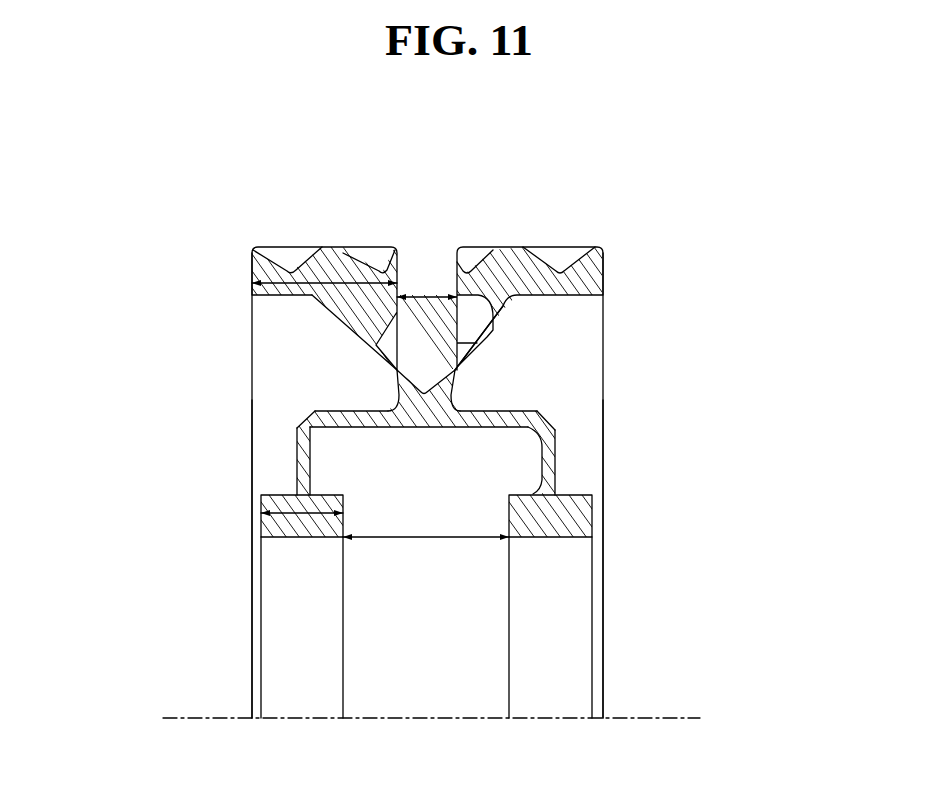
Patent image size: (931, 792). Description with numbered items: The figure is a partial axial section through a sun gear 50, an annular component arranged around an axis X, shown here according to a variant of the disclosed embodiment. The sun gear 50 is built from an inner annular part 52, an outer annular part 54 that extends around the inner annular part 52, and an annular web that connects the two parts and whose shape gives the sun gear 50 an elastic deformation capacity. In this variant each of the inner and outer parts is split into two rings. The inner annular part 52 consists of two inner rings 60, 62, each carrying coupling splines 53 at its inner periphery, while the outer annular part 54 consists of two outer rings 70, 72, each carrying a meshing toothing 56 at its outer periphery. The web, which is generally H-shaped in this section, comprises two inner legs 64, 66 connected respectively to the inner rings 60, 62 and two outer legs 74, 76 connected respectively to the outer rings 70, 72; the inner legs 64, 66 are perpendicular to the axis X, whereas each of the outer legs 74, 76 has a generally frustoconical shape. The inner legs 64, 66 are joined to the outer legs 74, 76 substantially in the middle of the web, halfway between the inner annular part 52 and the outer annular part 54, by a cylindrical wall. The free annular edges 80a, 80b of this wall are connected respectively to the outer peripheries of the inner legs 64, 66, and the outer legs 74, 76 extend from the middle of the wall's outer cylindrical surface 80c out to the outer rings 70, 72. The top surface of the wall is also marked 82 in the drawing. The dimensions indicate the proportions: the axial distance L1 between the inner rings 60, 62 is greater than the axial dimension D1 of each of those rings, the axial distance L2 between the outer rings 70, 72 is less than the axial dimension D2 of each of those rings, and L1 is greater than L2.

The sun gear 50 is at (435, 311).
The inner annular part 52 is at (617, 519).
The coupling splines 53 is at (280, 628).
The outer annular part 54 is at (619, 270).
The meshing toothing 56 is at (382, 255).
The inner ring 60 is at (262, 526).
The inner ring 62 is at (577, 508).
The inner leg 64 is at (297, 470).
The inner leg 66 is at (558, 478).
The outer ring 70 is at (340, 257).
The outer ring 72 is at (482, 275).
The outer leg 74 is at (377, 363).
The outer leg 76 is at (490, 352).
The free annular edge 80a is at (297, 428).
The free annular edge 80b is at (553, 460).
The outer cylindrical surface 80c is at (466, 405).
The top surface of seal body 82 is at (545, 428).
The axial dimension of inner ring D1 is at (305, 508).
The axial dimension of outer ring D2 is at (318, 257).
The axial distance between inner rings L1 is at (426, 525).
The axial distance between outer rings L2 is at (427, 285).
The axis X is at (670, 718).